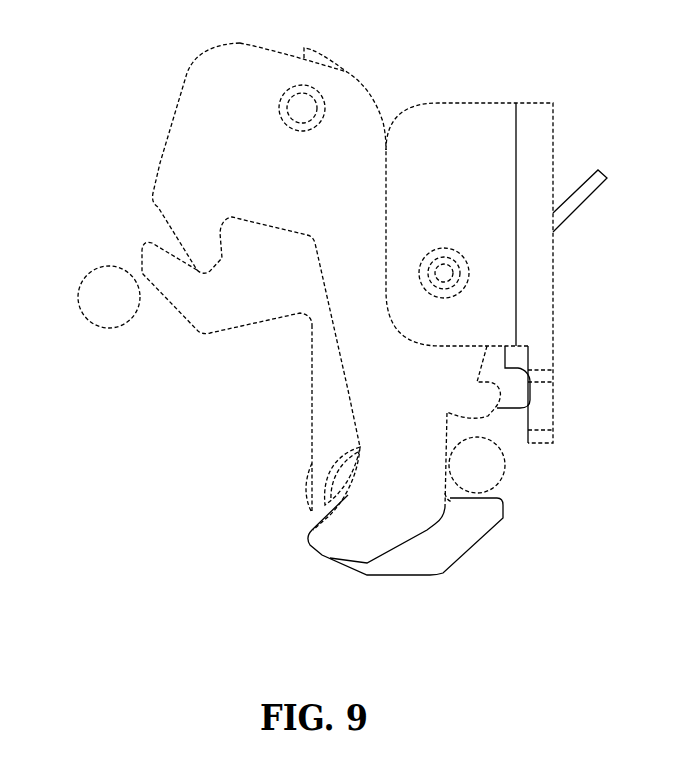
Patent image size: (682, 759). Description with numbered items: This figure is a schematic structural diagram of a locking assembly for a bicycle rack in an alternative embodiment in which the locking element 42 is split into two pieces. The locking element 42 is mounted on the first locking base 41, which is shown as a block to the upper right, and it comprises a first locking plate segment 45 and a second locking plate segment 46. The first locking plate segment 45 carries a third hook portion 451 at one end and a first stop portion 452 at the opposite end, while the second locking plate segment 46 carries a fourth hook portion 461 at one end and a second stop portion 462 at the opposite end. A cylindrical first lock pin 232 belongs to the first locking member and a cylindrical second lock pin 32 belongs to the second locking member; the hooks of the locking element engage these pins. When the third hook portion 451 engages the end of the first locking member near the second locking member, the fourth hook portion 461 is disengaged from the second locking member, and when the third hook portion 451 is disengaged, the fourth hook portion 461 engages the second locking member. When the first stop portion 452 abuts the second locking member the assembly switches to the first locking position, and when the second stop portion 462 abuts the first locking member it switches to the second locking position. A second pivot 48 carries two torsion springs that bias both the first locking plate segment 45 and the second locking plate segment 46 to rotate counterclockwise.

The first locking base 41 is at (490, 233).
The locking element 42 is at (262, 390).
The first locking plate segment 45 is at (212, 113).
The third hook portion 451 is at (222, 233).
The first stop portion 452 is at (427, 532).
The second locking plate segment 46 is at (422, 557).
The fourth hook portion 461 is at (463, 500).
The second stop portion 462 is at (178, 308).
The second pivot 48 is at (457, 280).
The second lock pin 32 is at (485, 463).
The first lock pin 232 is at (92, 298).